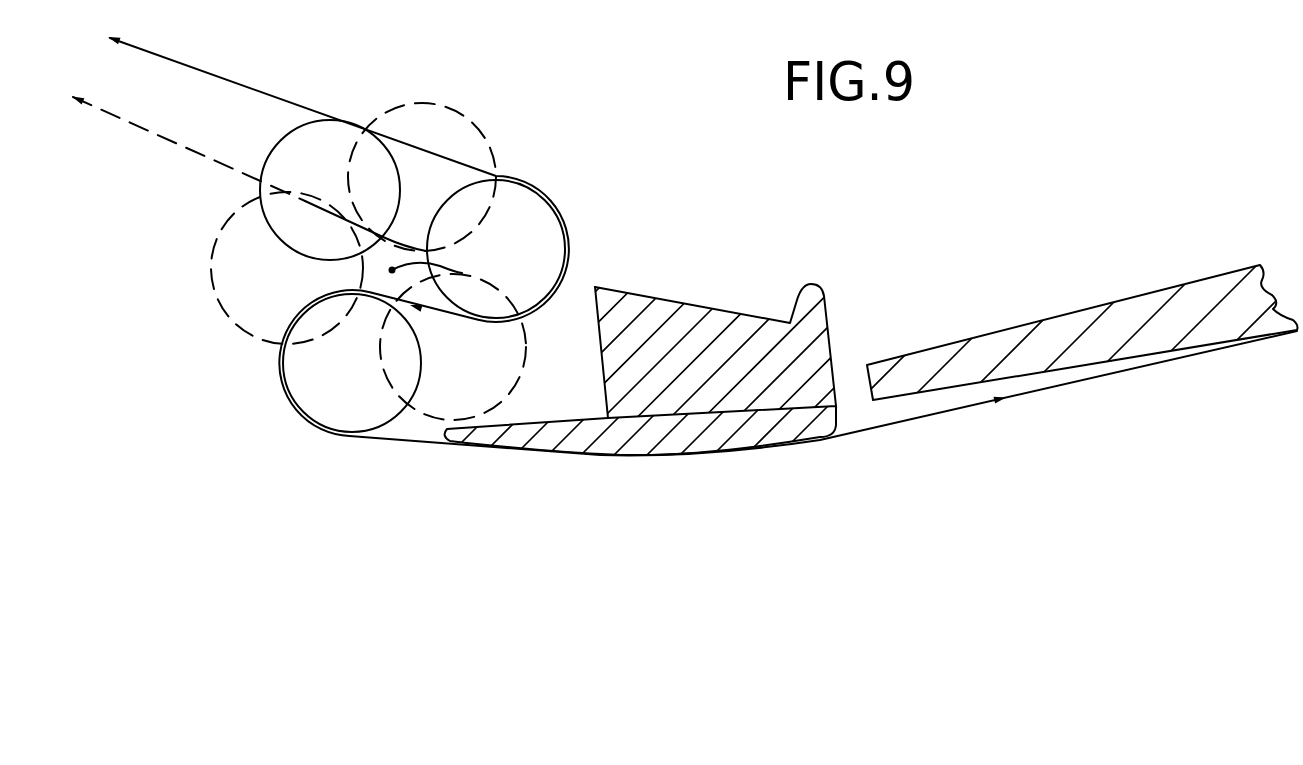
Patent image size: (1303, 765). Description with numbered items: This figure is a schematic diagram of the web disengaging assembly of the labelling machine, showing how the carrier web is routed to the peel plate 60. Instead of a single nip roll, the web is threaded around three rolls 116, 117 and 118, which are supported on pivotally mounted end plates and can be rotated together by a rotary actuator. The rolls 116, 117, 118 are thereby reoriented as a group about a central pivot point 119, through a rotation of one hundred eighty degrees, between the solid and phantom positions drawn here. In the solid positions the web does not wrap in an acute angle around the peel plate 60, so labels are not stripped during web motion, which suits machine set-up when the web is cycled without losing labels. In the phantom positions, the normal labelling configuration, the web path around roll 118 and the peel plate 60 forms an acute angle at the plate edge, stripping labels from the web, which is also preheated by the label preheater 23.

The label preheater 23 is at (1078, 318).
The peel plate 60 is at (665, 432).
The roll 116 is at (553, 200).
The roll 117 is at (472, 121).
The roll 118 is at (277, 147).
The central pivot point 119 is at (462, 273).